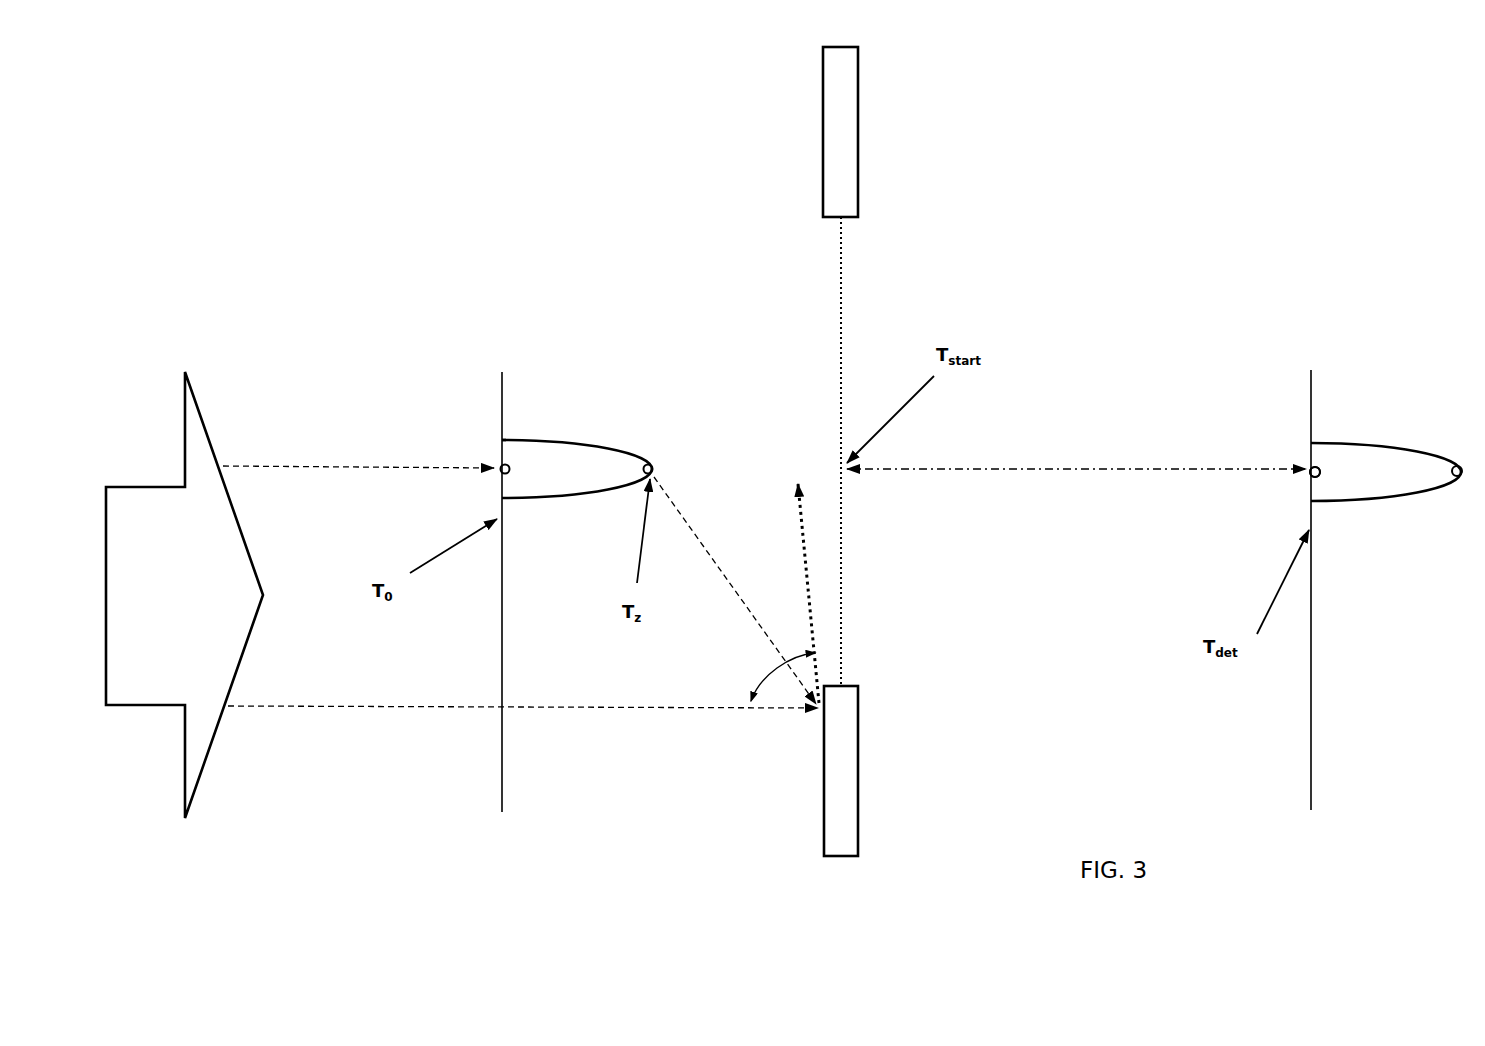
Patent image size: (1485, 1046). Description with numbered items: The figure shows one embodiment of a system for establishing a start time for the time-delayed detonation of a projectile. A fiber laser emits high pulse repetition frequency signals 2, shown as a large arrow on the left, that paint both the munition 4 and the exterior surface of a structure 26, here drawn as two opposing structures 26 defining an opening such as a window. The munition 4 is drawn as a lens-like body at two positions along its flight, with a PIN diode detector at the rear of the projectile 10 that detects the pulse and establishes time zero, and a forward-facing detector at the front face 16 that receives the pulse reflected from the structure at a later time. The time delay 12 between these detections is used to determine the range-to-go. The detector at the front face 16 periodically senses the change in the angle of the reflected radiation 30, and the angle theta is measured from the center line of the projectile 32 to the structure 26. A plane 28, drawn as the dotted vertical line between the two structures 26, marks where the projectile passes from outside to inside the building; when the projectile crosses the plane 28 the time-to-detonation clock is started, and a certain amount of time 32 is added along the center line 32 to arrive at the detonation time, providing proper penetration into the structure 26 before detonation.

The high pulse repetition frequency signals 2 is at (231, 438).
The munition 4 is at (567, 478).
The rear of the projectile 10 is at (1324, 479).
The time delay 12 is at (695, 710).
The front face of the projectile 16 is at (1455, 462).
The structure 26 is at (868, 158).
The plane 28 is at (861, 325).
The reflected radiation 30 is at (764, 684).
The center line of the projectile 32 is at (1129, 455).